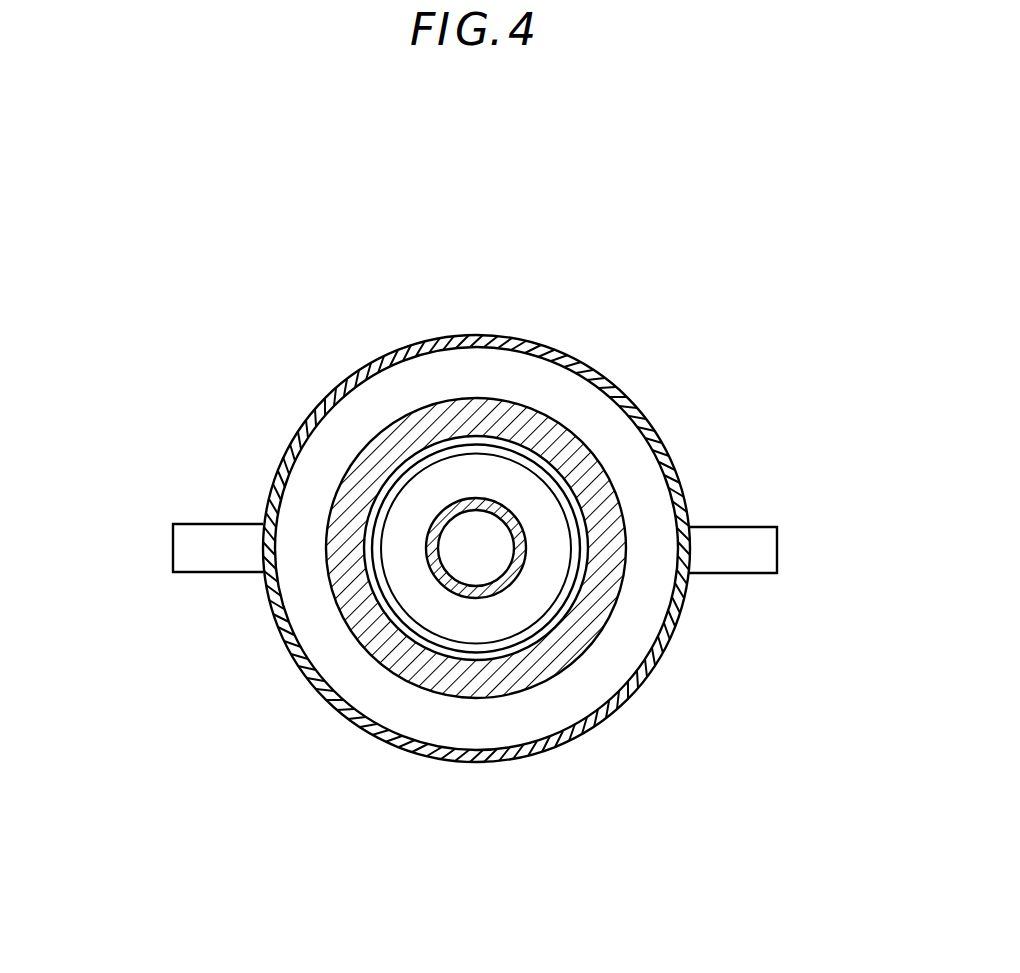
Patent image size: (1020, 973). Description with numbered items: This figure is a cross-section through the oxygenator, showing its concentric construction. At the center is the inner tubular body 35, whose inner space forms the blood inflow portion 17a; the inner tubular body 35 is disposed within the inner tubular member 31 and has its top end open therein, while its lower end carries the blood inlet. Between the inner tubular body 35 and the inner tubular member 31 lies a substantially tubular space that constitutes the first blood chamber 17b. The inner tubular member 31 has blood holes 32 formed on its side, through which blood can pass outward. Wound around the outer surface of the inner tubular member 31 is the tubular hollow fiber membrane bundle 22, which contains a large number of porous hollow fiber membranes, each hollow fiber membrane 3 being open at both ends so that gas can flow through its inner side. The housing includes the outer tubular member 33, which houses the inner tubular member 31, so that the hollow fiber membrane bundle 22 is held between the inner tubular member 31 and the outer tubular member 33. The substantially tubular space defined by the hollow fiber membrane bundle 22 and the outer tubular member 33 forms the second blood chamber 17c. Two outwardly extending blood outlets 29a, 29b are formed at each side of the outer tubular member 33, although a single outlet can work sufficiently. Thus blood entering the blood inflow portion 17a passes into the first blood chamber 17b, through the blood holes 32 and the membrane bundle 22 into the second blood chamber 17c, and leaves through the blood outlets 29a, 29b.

The hollow fiber membrane 3 is at (389, 648).
The blood inflow portion 17a is at (479, 532).
The first blood chamber 17b is at (522, 615).
The second blood chamber 17c is at (337, 657).
The tubular hollow fiber membrane bundle 22 is at (590, 521).
The blood outlet 29a is at (173, 553).
The blood outlet 29b is at (777, 548).
The inner tubular member 31 is at (368, 506).
The blood holes 32 is at (583, 558).
The outer tubular member 33 is at (487, 336).
The inner tubular body 35 is at (466, 590).